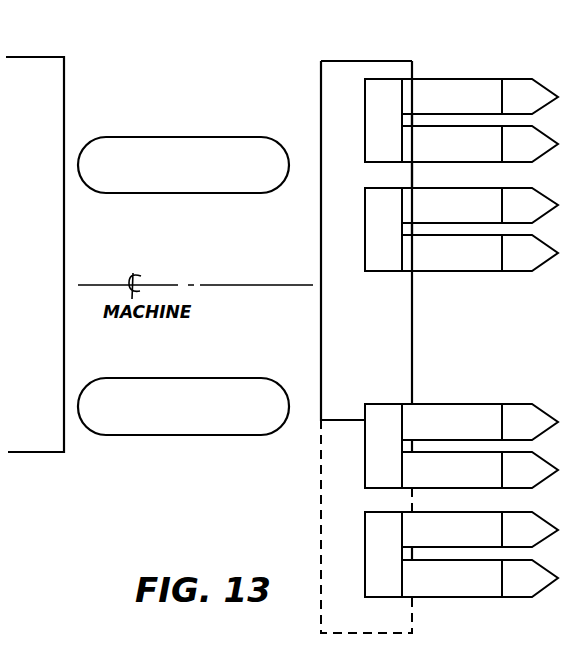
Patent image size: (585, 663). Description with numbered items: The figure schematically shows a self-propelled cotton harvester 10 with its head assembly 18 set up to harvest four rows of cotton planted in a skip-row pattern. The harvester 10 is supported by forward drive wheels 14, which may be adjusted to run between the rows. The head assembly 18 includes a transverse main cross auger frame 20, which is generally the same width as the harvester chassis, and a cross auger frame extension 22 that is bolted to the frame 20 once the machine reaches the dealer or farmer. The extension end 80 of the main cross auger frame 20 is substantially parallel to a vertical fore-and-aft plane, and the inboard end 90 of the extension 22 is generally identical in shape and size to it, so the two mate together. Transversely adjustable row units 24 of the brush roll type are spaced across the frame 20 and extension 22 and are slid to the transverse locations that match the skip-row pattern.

The cotton harvester 10 is at (75, 50).
The forward drive wheels 14 is at (238, 194).
The harvesting head assembly 18 is at (464, 304).
The cross auger frame 20 is at (322, 44).
The cross auger frame extension 22 is at (317, 531).
The row units 24 is at (558, 146).
The extension end 80 is at (316, 419).
The inboard end 90 is at (317, 428).